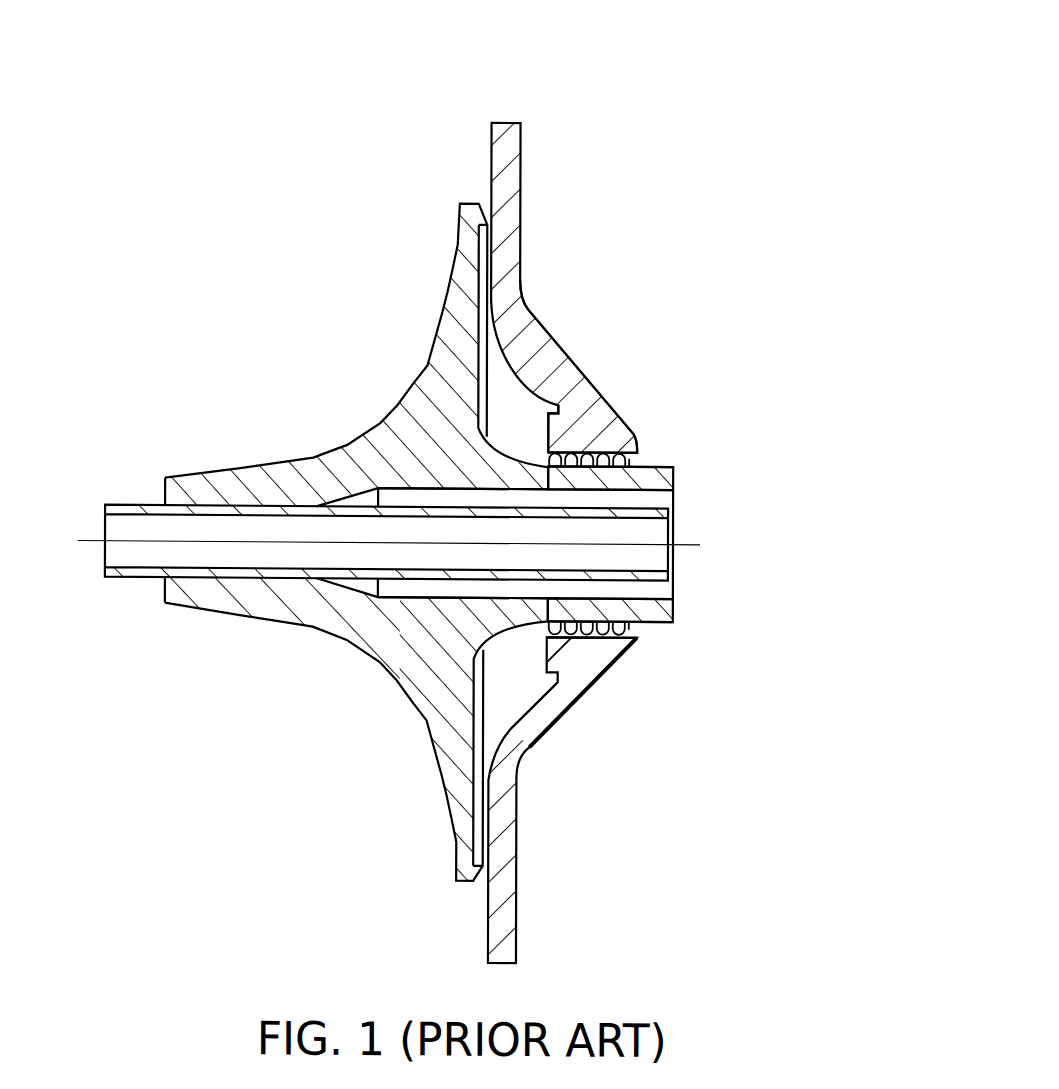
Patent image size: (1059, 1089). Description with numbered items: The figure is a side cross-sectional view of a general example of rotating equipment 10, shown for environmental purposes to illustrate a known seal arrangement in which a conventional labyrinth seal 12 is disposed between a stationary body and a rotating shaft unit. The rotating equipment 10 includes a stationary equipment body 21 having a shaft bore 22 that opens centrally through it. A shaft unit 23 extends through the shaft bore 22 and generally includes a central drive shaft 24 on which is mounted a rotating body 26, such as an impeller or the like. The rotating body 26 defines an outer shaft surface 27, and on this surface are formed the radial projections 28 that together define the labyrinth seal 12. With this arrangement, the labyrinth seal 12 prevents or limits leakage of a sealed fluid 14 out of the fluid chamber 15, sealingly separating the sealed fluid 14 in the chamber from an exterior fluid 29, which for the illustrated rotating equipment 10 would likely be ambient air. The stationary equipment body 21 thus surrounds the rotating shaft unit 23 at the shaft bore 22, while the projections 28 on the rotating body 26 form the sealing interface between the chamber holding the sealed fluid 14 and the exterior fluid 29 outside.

The rotating equipment 10 is at (652, 75).
The labyrinth seal 12 is at (652, 455).
The sealed fluid 14 is at (508, 367).
The fluid chamber 15 is at (533, 397).
The stationary equipment body 21 is at (514, 200).
The shaft bore 22 is at (640, 447).
The shaft unit 23 is at (680, 474).
The central drive shaft 24 is at (675, 513).
The rotating body 26 is at (422, 420).
The outer shaft surface 27 is at (663, 625).
The radial projections 28 is at (635, 628).
The exterior fluid 29 is at (718, 625).